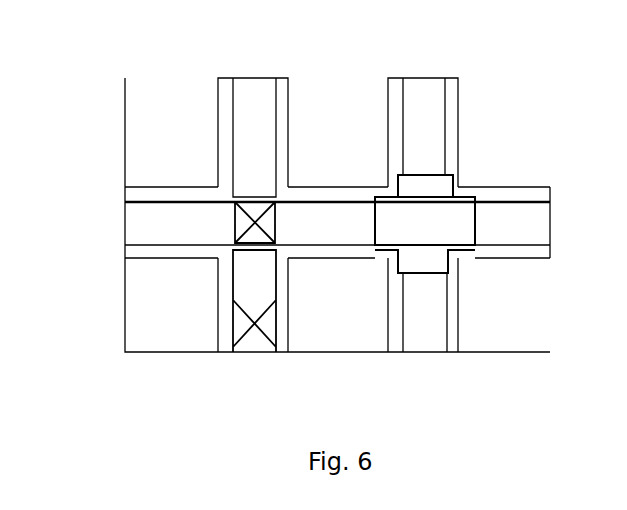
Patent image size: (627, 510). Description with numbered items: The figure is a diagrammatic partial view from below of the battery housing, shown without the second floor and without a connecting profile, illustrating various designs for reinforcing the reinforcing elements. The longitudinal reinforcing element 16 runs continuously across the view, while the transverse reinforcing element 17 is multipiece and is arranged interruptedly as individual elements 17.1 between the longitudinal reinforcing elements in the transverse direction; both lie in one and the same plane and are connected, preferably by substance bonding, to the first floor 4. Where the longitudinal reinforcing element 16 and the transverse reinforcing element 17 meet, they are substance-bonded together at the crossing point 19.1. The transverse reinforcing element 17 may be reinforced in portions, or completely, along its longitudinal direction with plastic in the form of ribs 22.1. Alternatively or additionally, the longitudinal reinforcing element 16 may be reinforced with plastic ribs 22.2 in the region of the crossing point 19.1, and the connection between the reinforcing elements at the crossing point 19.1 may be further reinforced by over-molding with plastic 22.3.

The first floor 4 is at (155, 313).
The longitudinal reinforcing element 16 is at (165, 223).
The transverse reinforcing element 17 is at (237, 364).
The individual element 17.1 is at (430, 310).
The crossing point 19.1 is at (431, 211).
The ribs 22.1 is at (250, 324).
The plastic ribs 22.2 is at (258, 223).
The plastic over-molding 22.3 is at (453, 192).